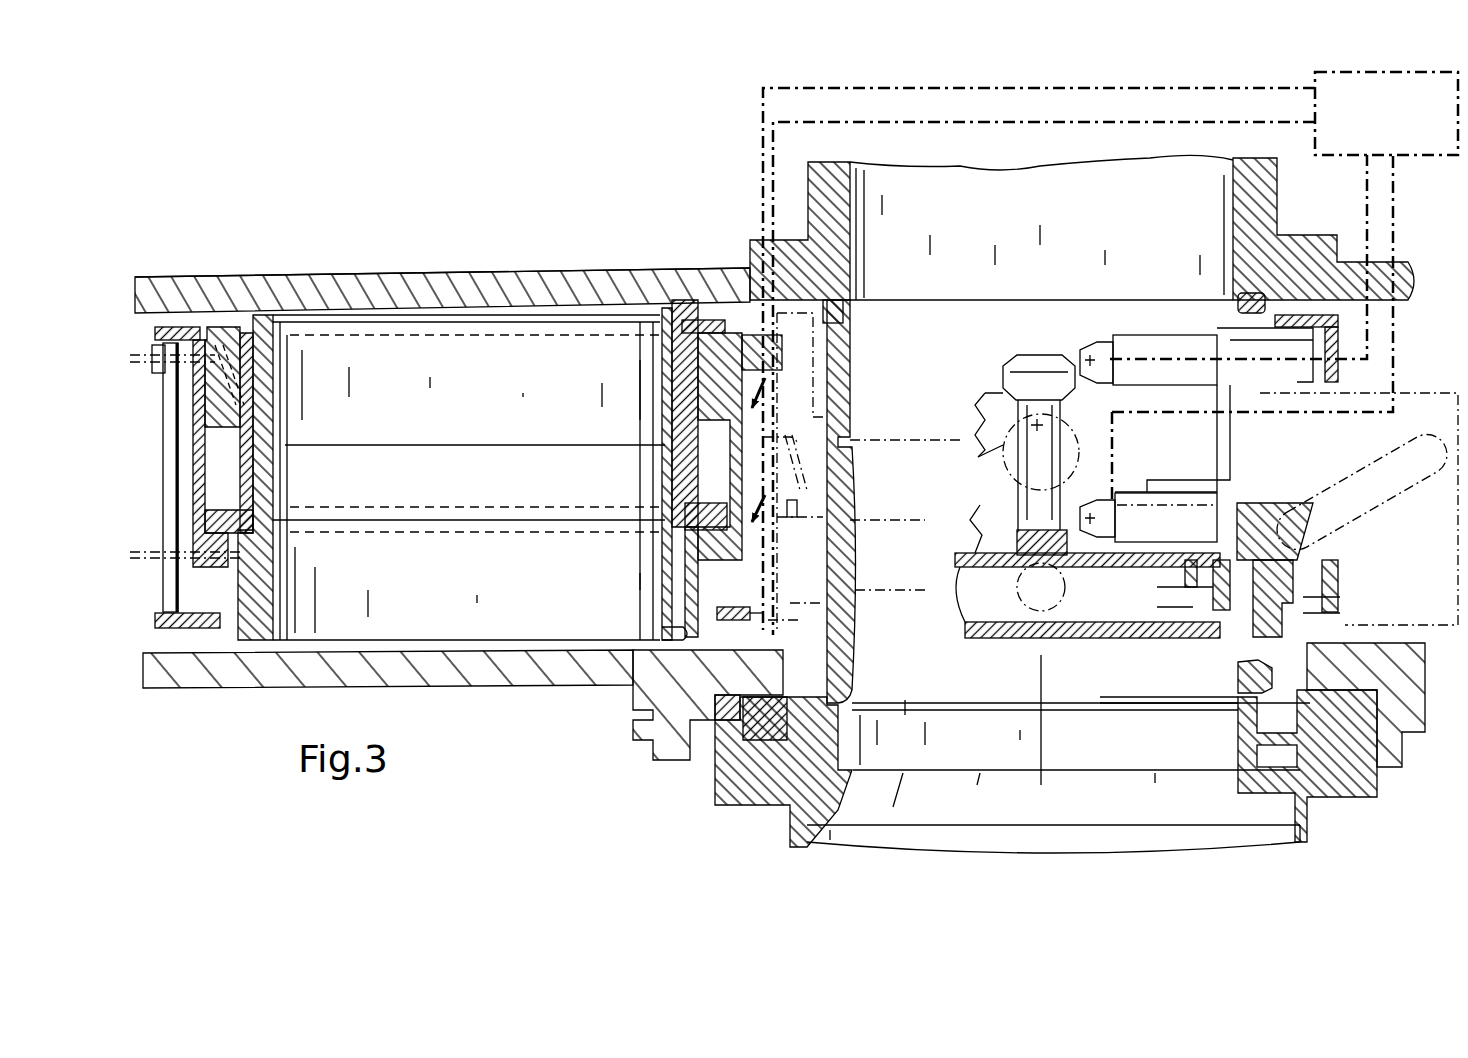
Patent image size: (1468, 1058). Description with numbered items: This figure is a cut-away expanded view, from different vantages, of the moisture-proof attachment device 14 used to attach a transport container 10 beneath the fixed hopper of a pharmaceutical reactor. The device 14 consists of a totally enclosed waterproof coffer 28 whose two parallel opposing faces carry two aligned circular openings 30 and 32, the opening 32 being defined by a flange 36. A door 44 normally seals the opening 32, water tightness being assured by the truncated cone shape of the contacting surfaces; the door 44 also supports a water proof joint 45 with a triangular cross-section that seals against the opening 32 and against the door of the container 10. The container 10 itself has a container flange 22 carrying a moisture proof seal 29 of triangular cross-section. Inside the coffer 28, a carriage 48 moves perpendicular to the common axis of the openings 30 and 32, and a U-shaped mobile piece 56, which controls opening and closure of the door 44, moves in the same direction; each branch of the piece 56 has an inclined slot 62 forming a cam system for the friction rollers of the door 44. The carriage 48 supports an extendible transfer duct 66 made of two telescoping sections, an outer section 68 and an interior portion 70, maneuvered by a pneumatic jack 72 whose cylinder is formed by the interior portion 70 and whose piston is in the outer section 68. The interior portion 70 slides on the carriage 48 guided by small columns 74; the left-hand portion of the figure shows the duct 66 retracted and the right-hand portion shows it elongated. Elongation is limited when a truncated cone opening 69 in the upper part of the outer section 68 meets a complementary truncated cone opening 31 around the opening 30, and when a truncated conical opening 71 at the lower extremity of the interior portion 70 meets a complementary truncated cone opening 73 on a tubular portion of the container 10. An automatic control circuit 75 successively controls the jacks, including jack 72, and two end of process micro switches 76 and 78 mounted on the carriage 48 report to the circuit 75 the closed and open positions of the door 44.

The transport container 10 is at (787, 838).
The moisture-proof attachment device 14 is at (280, 268).
The container flange 22 is at (1313, 781).
The waterproof coffer 28 is at (472, 290).
The moisture proof seal 29 is at (1280, 703).
The circular opening 30 is at (850, 236).
The complementary truncated cone opening 31 is at (1234, 305).
The circular opening 32 is at (790, 667).
The flange 36 is at (1380, 674).
The door 44 is at (963, 553).
The water proof joint 45 is at (1297, 542).
The carriage 48 is at (205, 632).
The mobile piece 56 is at (1450, 390).
The slot 62 is at (1013, 442).
The extendible transfer duct 66 is at (652, 628).
The outer section of the transfer duct 68 is at (690, 490).
The truncated cone opening 69 is at (641, 300).
The interior portion of the transfer duct 70 is at (258, 600).
The truncated conical opening 71 is at (683, 636).
The pneumatic jack 72 is at (183, 477).
The complementary truncated cone opening 73 is at (856, 703).
The small columns 74 is at (165, 390).
The automatic control circuit 75 is at (1370, 127).
The end of process micro switch 76 is at (1097, 482).
The end of process micro switch 78 is at (1098, 344).